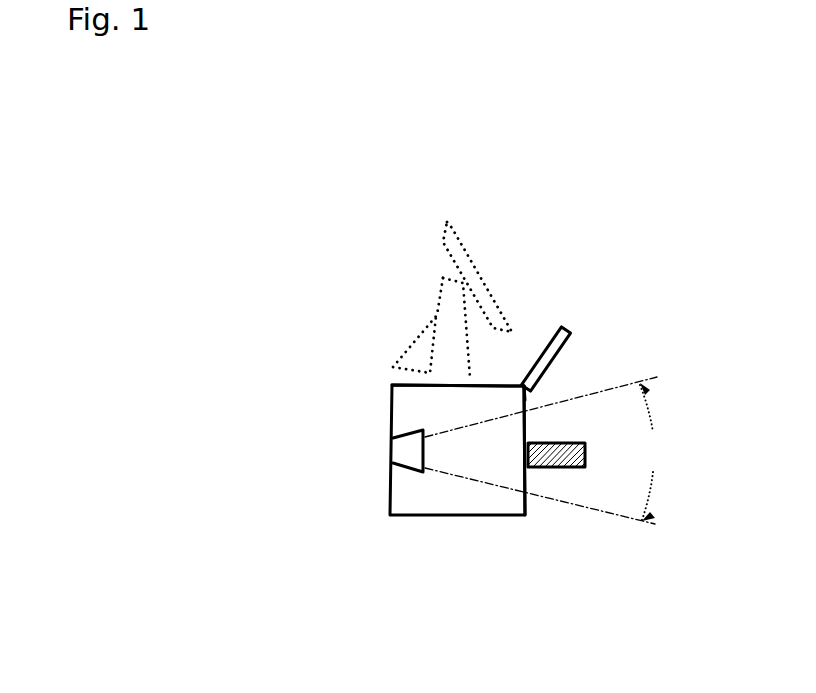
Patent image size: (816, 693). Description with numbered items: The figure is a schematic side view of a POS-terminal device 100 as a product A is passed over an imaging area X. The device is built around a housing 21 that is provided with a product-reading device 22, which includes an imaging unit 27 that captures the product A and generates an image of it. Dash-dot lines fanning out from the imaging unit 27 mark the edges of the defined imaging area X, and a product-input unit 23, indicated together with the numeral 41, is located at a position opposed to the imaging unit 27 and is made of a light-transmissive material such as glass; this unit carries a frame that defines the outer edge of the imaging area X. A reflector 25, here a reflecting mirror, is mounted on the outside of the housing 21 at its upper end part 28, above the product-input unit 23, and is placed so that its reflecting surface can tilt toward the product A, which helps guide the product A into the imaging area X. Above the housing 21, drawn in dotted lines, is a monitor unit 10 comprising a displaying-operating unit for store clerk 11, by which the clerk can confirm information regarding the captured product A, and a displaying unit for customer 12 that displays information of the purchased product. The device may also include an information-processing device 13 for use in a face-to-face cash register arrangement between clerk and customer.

The POS-terminal device 100 is at (600, 152).
The monitor unit 10 is at (391, 295).
The displaying-operating unit for store clerk 11 is at (445, 235).
The displaying unit for customer 12 is at (405, 328).
The information-processing device 13 is at (438, 379).
The housing 21 is at (440, 516).
The product-reading device 22 is at (405, 502).
The product-input unit 23 is at (523, 465).
The camera 41 is at (453, 577).
The reflector 25 is at (543, 354).
The imaging unit 27 is at (410, 453).
The upper end part 28 is at (530, 397).
The product A is at (566, 443).
The imaging area X is at (650, 452).